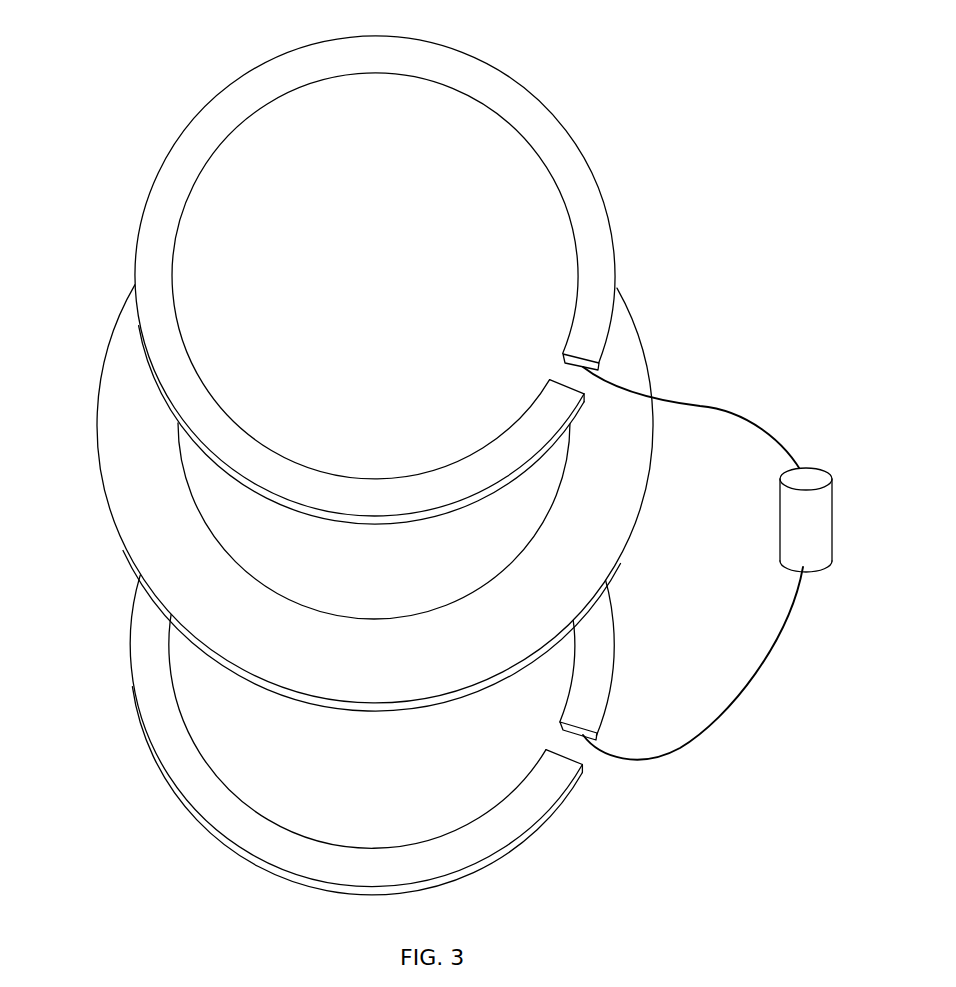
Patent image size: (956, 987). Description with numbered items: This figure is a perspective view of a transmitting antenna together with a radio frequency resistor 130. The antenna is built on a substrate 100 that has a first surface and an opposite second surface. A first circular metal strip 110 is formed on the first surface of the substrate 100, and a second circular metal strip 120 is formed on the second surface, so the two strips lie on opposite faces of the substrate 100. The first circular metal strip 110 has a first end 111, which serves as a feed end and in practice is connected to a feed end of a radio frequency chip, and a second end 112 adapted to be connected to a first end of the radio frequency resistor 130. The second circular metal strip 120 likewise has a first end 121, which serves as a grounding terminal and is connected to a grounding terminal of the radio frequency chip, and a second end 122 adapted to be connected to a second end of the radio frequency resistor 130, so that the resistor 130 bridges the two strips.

The substrate 100 is at (133, 476).
The first circular metal strip 110 is at (583, 183).
The first end of the first circular metal strip 111 is at (550, 380).
The second end of the first circular metal strip 112 is at (563, 357).
The second circular metal strip 120 is at (227, 820).
The first end of the second circular metal strip 121 is at (546, 750).
The second end of the second circular metal strip 122 is at (560, 723).
The radio frequency resistor 130 is at (788, 522).